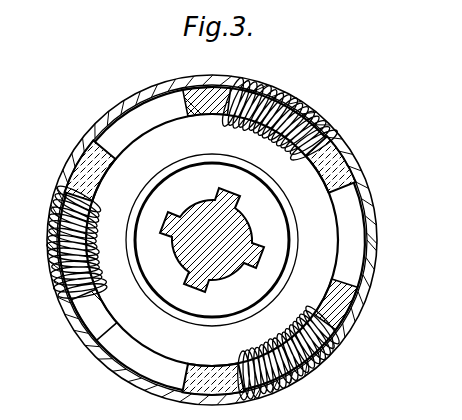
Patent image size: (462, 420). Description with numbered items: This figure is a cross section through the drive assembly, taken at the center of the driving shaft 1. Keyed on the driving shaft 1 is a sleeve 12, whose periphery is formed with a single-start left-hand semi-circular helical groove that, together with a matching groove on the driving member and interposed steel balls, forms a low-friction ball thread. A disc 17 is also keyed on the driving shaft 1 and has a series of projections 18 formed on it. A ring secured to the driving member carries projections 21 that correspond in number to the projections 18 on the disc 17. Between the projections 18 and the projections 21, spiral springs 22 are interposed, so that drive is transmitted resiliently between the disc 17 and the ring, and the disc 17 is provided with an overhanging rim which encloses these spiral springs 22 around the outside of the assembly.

The driving shaft 1 is at (228, 197).
The sleeve 12 is at (190, 190).
The disc 17 is at (107, 368).
The projections 18 is at (344, 154).
The projections 21 is at (221, 89).
The spiral springs 22 is at (284, 108).